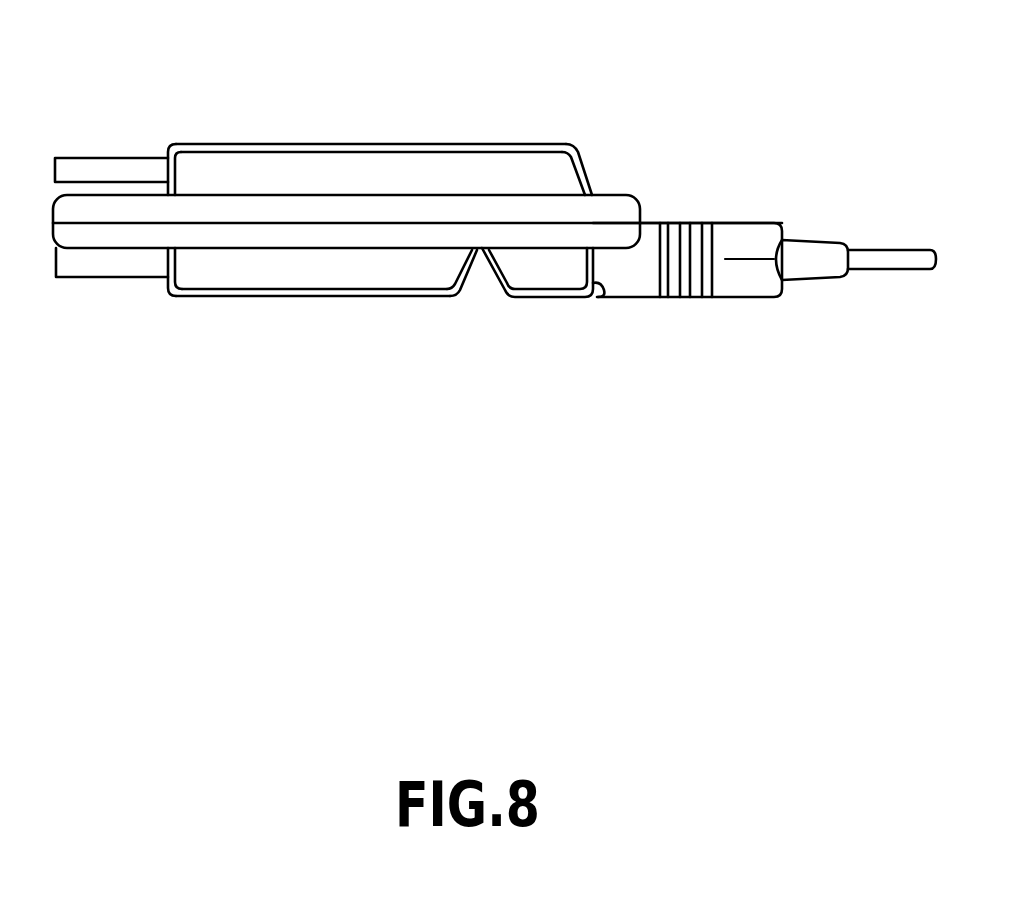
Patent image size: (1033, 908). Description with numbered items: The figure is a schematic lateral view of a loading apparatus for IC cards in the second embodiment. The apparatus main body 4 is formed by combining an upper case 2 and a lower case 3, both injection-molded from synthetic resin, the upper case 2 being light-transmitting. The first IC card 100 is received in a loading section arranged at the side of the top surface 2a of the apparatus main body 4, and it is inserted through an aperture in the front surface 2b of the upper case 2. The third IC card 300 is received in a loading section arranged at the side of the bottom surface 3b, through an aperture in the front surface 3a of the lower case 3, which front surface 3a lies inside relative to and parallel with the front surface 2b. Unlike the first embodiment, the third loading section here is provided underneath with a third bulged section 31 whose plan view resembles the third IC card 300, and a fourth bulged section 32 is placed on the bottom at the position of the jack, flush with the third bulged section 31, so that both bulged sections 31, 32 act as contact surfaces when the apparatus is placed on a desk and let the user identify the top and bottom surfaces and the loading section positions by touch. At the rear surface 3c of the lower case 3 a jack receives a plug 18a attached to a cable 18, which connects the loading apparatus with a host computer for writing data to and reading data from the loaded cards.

The first IC card 100 is at (72, 165).
The third IC card 300 is at (71, 265).
The apparatus main body 4 is at (670, 82).
The upper case 2 is at (367, 105).
The top surface 2a is at (276, 144).
The front surface 2b is at (168, 150).
The lower case 3 is at (399, 249).
The front surface 3a is at (167, 293).
The bottom surface 3b is at (276, 297).
The rear surface 3c is at (600, 298).
The third bulged section 31 is at (309, 336).
The fourth bulged section 32 is at (557, 319).
The plug 18a is at (735, 238).
The cable 18 is at (892, 253).